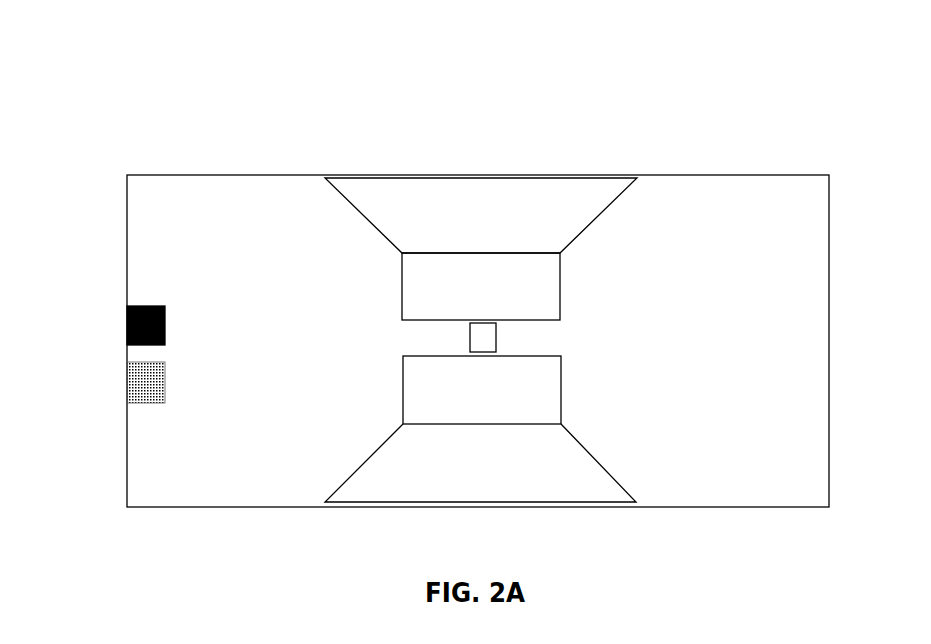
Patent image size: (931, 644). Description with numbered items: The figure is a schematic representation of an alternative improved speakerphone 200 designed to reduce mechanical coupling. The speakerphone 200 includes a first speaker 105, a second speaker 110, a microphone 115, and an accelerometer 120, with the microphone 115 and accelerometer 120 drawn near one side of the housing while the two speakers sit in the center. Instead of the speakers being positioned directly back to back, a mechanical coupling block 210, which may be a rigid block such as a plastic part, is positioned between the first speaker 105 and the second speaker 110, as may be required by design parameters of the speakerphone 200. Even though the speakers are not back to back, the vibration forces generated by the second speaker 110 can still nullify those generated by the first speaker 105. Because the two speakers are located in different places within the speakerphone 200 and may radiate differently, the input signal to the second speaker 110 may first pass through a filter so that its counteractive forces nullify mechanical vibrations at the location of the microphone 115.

The speakerphone 200 is at (109, 66).
The first speaker 105 is at (488, 175).
The second speaker 110 is at (348, 477).
The microphone 115 is at (147, 306).
The accelerometer 120 is at (145, 403).
The mechanical coupling block 210 is at (496, 340).